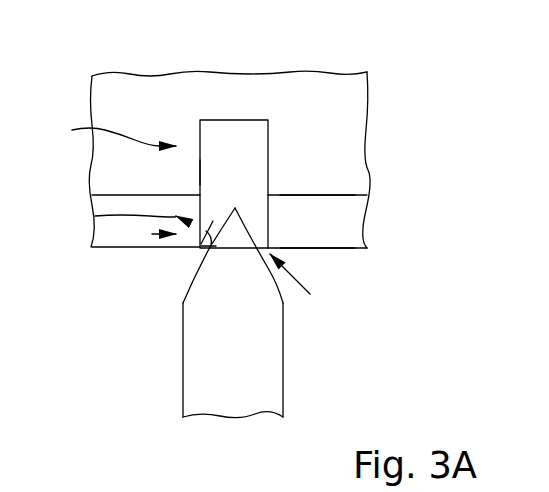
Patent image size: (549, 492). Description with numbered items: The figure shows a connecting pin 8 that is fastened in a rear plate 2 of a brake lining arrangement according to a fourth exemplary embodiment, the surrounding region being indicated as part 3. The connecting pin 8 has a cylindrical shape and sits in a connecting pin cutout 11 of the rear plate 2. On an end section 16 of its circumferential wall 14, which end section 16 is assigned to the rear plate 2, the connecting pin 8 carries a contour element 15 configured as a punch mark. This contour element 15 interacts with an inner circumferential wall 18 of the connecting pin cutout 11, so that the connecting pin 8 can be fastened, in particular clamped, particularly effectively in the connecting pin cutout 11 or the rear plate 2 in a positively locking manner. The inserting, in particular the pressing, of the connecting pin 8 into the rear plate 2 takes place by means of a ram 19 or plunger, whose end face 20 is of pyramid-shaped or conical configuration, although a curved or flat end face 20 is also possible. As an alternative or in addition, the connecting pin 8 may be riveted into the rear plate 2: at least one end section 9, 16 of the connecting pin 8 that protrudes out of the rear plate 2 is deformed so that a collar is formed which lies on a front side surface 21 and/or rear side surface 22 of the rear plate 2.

The rear plate 2 is at (337, 237).
The machine body / tool 3 is at (183, 88).
The connecting pin 8 is at (250, 167).
The end section 9 is at (115, 132).
The connecting pin cutout 11 is at (298, 291).
The circumferential wall 14 is at (200, 172).
The contour element 15 is at (95, 216).
The end section 16 is at (165, 236).
The inner circumferential wall 18 is at (199, 248).
The ram 19 is at (212, 373).
The end face 20 is at (212, 293).
The front side surface 21 is at (305, 192).
The rear side surface 22 is at (307, 250).